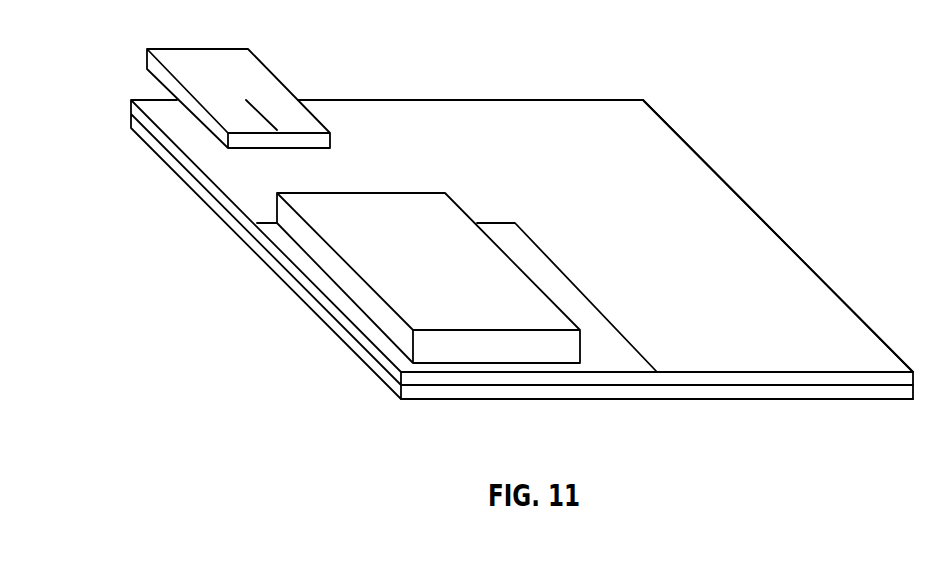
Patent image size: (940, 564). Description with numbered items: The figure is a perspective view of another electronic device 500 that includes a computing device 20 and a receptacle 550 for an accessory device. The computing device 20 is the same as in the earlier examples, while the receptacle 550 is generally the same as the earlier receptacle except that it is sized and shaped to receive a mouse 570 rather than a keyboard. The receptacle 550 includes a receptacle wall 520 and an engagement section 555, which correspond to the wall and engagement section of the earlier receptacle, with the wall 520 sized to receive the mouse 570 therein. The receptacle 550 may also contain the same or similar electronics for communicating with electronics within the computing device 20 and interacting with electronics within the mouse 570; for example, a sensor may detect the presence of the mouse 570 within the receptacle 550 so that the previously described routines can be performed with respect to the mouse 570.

The electronic device 500 is at (685, 48).
The computing device 20 is at (438, 100).
The mouse 570 is at (182, 63).
The receptacle wall 520 is at (405, 217).
The receptacle 550 is at (547, 256).
The engagement section 555 is at (622, 360).